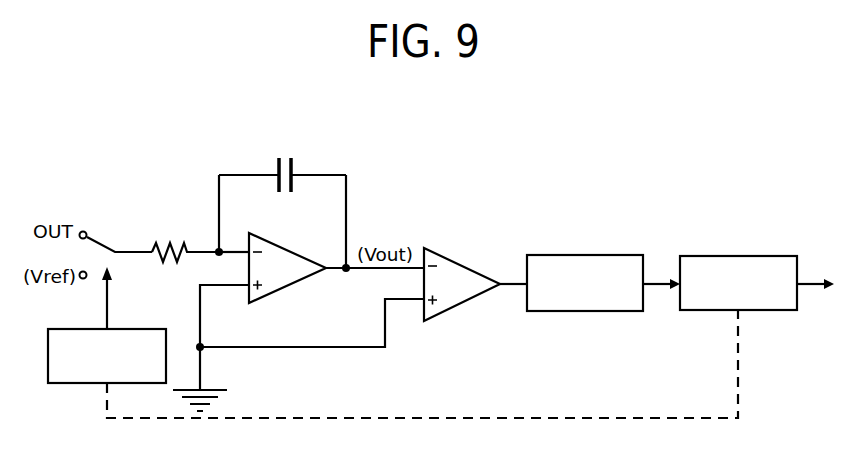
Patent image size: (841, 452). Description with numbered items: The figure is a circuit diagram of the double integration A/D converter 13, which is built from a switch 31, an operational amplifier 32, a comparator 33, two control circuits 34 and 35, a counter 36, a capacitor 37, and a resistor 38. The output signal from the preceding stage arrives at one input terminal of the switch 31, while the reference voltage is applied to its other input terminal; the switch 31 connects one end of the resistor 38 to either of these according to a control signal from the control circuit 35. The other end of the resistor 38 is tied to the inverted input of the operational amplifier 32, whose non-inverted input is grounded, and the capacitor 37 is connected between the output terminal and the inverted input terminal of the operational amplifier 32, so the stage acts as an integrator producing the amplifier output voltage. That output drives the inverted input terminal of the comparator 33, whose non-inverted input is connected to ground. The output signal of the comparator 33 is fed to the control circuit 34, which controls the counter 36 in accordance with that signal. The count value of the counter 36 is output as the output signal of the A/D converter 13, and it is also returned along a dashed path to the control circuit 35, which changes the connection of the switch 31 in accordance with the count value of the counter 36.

The double integration A/D converter 13 is at (458, 183).
The switch 31 is at (104, 242).
The operational amplifier 32 is at (271, 240).
The comparator 33 is at (459, 262).
The control circuit 34 is at (609, 255).
The control circuit 35 is at (68, 384).
The counter 36 is at (752, 256).
The capacitor 37 is at (272, 171).
The resistor 38 is at (167, 242).